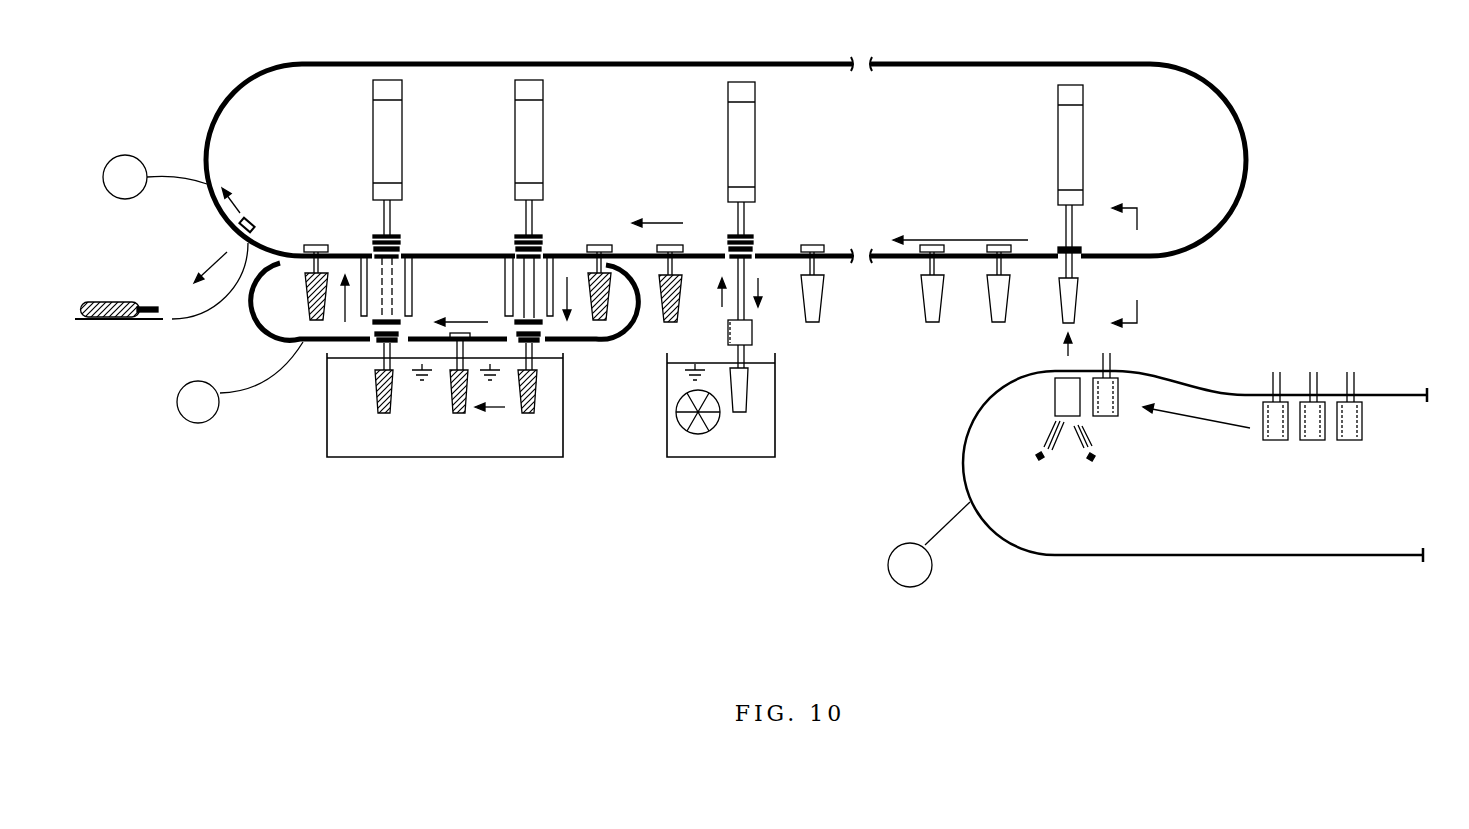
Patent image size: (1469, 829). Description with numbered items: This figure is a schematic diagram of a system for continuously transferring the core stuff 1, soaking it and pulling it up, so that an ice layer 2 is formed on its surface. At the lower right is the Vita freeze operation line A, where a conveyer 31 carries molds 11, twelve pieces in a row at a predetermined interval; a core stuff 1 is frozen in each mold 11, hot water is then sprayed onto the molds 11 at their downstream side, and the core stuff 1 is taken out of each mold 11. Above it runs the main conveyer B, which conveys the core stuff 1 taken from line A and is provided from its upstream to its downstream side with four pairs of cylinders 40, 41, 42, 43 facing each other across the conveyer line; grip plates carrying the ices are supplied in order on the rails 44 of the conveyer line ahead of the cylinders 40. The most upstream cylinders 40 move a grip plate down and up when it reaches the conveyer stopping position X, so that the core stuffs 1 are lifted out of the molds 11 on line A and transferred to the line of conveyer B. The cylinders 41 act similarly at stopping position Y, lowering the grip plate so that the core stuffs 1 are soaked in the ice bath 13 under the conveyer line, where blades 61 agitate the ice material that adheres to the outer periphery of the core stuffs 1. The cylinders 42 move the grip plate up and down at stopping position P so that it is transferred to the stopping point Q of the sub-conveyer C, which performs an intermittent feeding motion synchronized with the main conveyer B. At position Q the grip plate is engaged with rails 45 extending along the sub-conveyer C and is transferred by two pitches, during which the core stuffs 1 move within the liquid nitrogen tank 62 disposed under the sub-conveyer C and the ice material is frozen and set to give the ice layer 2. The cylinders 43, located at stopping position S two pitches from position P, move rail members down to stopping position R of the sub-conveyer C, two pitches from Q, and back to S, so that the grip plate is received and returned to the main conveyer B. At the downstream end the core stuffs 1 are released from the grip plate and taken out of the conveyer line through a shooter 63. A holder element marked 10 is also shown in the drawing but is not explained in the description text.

The core stuff 1 is at (918, 300).
The ice layer 2 is at (447, 402).
The holder 10 is at (1072, 270).
The mold 11 is at (1345, 442).
The ice bath 13 is at (777, 417).
The conveyer 31 is at (1395, 390).
The cylinders 40 is at (1078, 125).
The cylinders 41 is at (748, 127).
The cylinders 42 is at (540, 122).
The cylinders 43 is at (397, 115).
The rails 44 is at (1247, 163).
The rails 45 is at (263, 315).
The blades 61 is at (690, 433).
The liquid nitrogen tank 62 is at (563, 440).
The shooter 63 is at (172, 319).
The stopping position S is at (397, 240).
The stopping position P is at (537, 242).
The stopping position Q is at (540, 343).
The stopping position R is at (368, 343).
The conveyer stopping position X is at (1080, 250).
The stopping position Y is at (752, 240).
The Vita freeze operation line A is at (1016, 384).
The main conveyer B is at (155, 177).
The sub-conveyer C is at (240, 382).